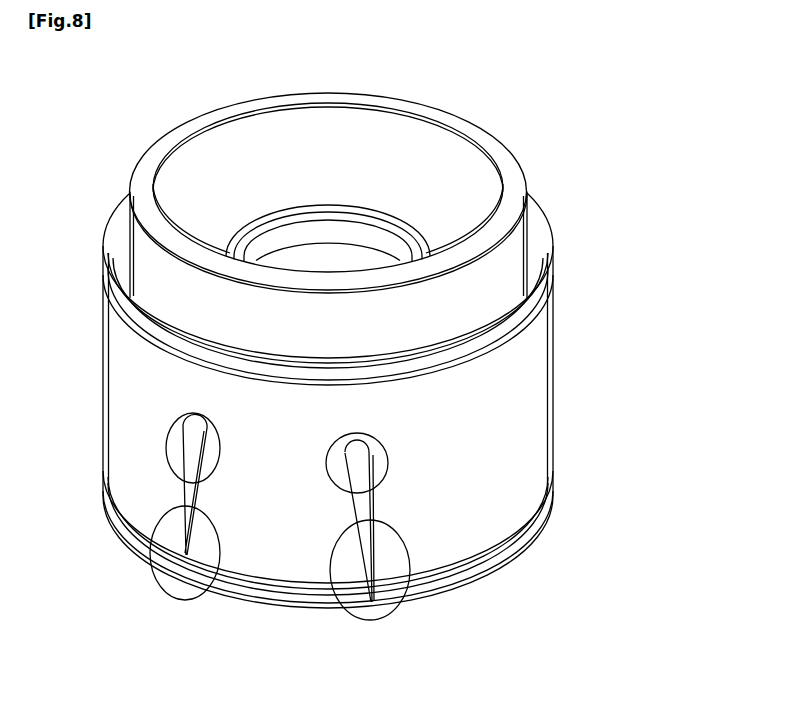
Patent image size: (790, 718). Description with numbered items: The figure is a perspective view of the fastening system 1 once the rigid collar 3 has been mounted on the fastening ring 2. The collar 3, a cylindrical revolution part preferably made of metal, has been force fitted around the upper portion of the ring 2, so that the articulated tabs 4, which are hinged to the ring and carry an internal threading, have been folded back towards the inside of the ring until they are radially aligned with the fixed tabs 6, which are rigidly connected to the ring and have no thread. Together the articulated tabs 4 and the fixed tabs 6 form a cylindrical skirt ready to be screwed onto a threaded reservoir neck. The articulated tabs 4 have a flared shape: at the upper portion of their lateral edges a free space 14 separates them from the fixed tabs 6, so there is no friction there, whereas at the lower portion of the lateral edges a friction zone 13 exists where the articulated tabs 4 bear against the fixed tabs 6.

The fastening system 1 is at (642, 105).
The fastening ring 2 is at (540, 200).
The rigid collar 3 is at (554, 318).
The articulated tabs 4 is at (277, 560).
The fixed tabs 6 is at (130, 481).
The friction zone 13 is at (180, 603).
The free space 14 is at (173, 432).